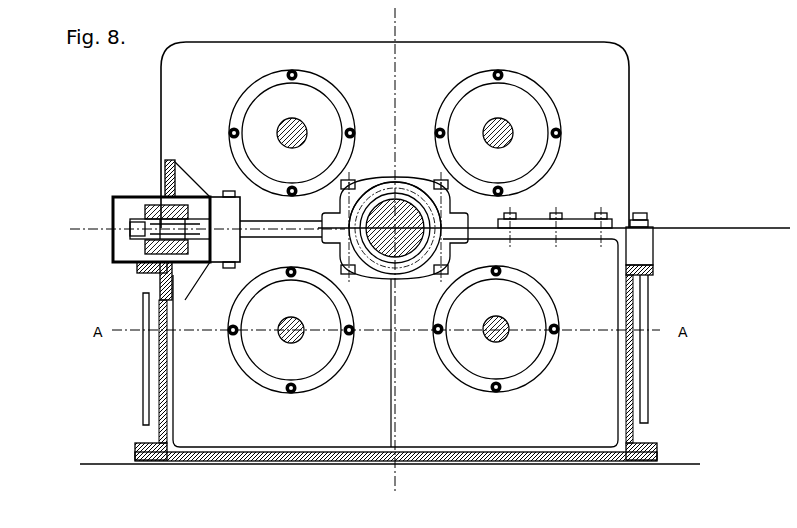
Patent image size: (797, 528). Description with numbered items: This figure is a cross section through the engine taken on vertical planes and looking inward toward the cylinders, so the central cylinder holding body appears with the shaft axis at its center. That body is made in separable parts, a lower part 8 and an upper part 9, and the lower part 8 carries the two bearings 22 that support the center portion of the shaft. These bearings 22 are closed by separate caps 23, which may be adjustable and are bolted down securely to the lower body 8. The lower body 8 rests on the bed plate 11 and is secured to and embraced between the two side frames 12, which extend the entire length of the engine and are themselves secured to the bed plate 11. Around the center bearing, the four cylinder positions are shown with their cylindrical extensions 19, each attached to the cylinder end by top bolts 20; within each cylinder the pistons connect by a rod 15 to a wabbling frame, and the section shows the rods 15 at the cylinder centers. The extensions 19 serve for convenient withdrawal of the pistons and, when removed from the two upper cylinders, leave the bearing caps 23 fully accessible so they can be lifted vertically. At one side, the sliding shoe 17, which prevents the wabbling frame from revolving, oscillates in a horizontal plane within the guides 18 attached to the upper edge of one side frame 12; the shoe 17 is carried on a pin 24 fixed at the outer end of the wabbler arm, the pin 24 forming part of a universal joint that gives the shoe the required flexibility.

The lower part of the cylinder holding body 8 is at (628, 248).
The upper part of the cylinder holding body 9 is at (622, 82).
The bed plate 11 is at (245, 458).
The side frames 12 is at (160, 336).
The rod 15 is at (288, 128).
The sliding shoe 17 is at (150, 196).
The guides 18 is at (128, 196).
The cylindrical extensions 19 is at (300, 72).
The top bolts 20 is at (560, 130).
The bearings 22 is at (408, 290).
The caps 23 is at (407, 185).
The pin 24 is at (132, 224).